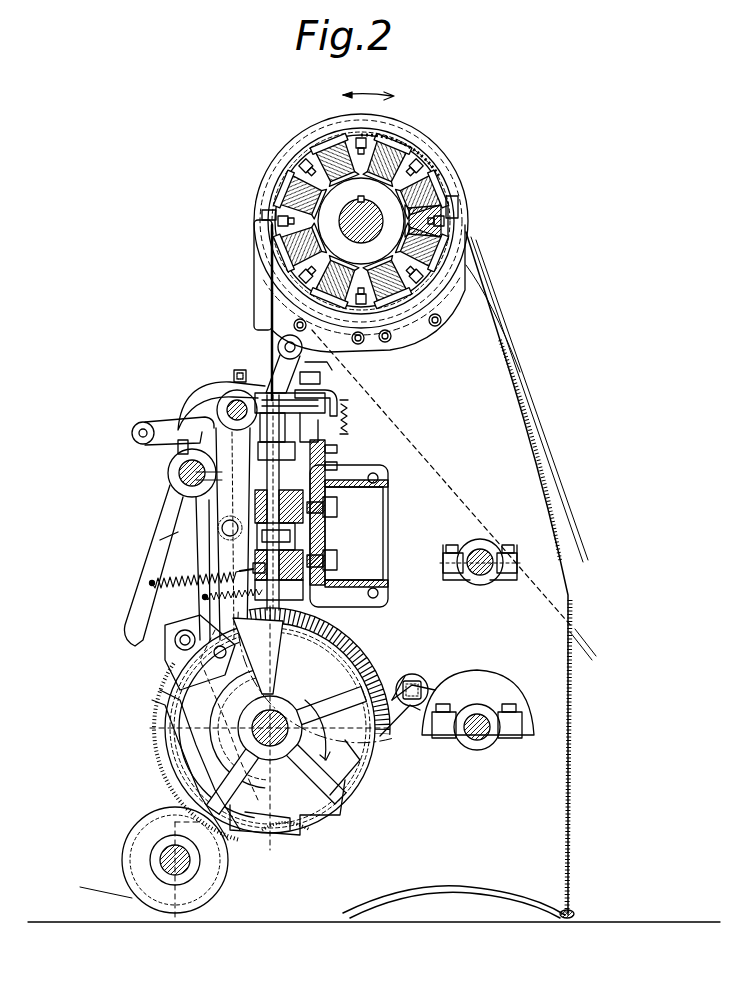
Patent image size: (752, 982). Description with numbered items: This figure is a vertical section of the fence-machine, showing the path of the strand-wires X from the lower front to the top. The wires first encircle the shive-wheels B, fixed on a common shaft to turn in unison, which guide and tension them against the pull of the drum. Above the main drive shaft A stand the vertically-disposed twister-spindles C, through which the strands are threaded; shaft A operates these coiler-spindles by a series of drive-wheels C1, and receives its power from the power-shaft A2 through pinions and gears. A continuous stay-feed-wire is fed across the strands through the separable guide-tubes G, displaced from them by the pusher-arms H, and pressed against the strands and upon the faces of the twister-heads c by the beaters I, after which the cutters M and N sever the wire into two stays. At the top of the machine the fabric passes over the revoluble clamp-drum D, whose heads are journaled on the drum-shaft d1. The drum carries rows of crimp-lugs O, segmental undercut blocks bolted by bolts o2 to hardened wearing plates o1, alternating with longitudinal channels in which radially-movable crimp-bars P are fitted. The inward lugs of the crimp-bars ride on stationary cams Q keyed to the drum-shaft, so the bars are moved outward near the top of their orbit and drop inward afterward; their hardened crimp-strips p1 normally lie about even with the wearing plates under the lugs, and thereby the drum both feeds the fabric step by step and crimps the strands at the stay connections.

The clamp-drum D is at (270, 160).
The crimp-lugs O is at (305, 158).
The stationary cams Q is at (361, 221).
The crimp-bars P is at (378, 140).
The crimp-strips p1 is at (382, 132).
The wearing plates o1 is at (425, 160).
The bolts o2 is at (466, 208).
The drum-shaft d1 is at (333, 217).
The strand-wires X is at (270, 298).
The beaters I is at (272, 393).
The separable guide-tubes G is at (290, 402).
The pusher-arms H is at (343, 372).
The twister-heads c is at (285, 425).
The twister-spindles C is at (325, 437).
The cutter M is at (262, 364).
The cutter N is at (220, 412).
The main drive shaft A is at (292, 728).
The drive-wheels C1 is at (243, 682).
The power-shaft A2 is at (486, 548).
The shive-wheels B is at (138, 860).